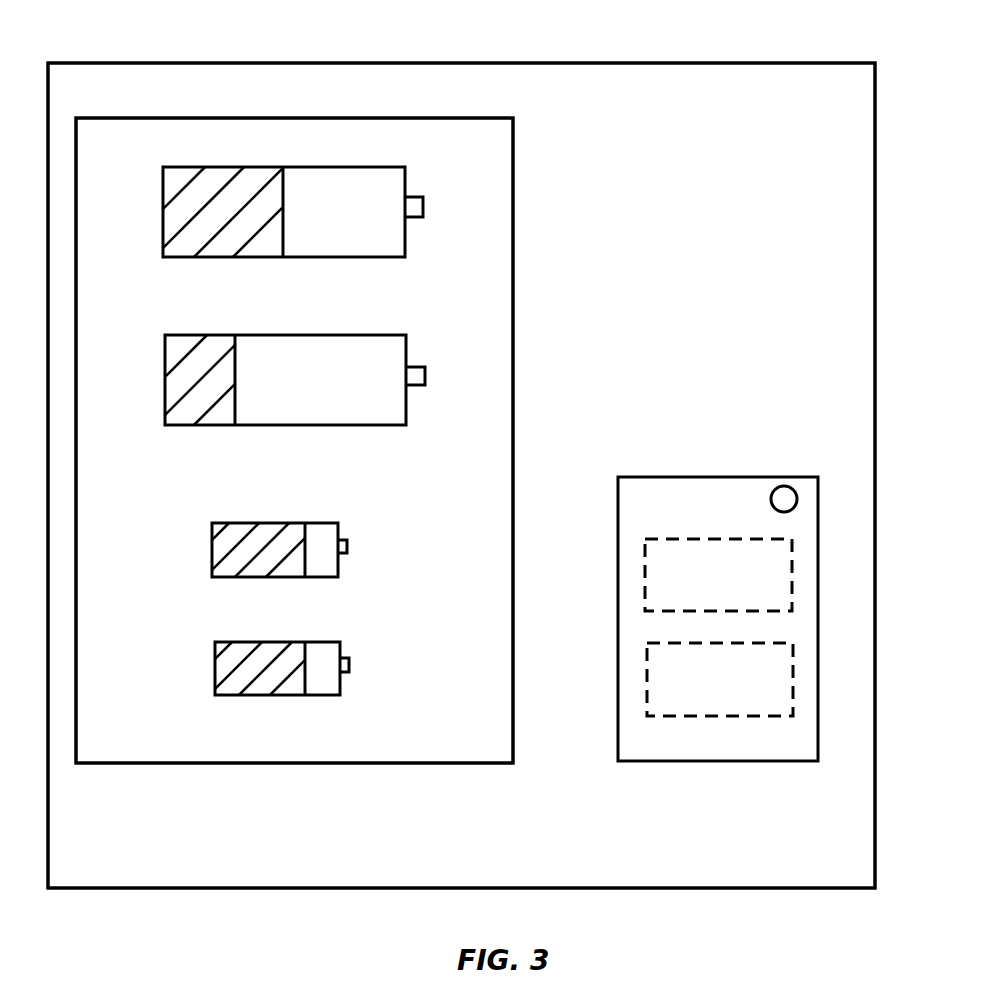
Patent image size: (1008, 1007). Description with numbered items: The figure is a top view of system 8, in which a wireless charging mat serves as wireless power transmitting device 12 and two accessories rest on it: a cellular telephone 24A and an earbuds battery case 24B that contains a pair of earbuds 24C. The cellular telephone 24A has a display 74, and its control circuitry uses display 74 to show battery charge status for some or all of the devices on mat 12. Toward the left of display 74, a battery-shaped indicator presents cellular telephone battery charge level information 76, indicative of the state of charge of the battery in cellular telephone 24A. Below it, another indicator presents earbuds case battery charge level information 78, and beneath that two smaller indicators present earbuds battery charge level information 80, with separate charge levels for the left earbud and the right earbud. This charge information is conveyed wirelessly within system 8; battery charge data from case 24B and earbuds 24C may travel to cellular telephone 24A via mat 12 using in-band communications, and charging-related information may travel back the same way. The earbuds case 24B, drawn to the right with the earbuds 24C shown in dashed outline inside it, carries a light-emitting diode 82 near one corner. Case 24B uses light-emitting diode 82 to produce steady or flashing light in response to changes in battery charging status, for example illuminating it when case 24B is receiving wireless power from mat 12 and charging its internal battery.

The system 8 is at (696, 50).
The wireless power transmitting device 12 is at (715, 888).
The cellular telephone 24A is at (512, 220).
The display 74 is at (504, 170).
The cellular telephone battery charge level information 76 is at (150, 210).
The earbuds case battery charge level information 78 is at (150, 366).
The earbuds battery charge level information 80 is at (171, 547).
The earbuds battery case 24B is at (722, 477).
The light-emitting diode 82 is at (798, 497).
The earbuds 24C is at (645, 570).